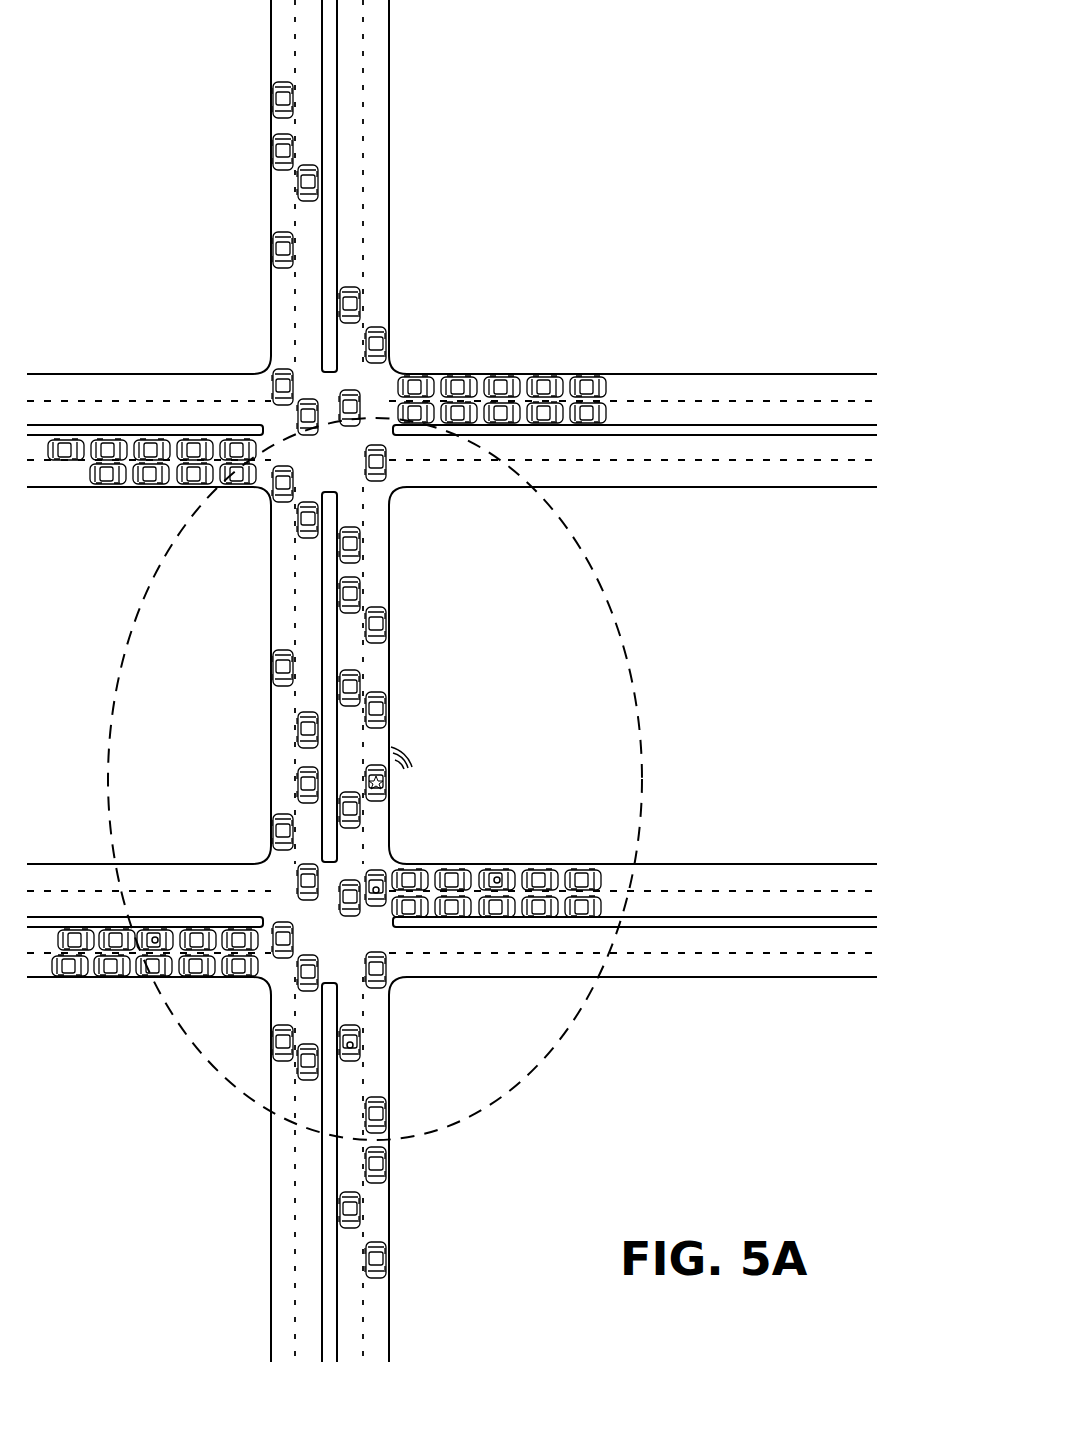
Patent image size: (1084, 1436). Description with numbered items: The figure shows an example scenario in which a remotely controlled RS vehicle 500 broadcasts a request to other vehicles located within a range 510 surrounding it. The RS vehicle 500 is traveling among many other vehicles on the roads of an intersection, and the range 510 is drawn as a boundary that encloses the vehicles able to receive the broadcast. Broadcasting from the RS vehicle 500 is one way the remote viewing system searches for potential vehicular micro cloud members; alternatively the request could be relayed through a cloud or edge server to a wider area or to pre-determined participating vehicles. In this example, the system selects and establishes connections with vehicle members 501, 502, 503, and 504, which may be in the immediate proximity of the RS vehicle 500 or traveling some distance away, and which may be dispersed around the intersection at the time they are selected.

The RS vehicle 500 is at (386, 789).
The vehicle member 501 is at (152, 936).
The vehicle member 502 is at (358, 1040).
The vehicle member 503 is at (377, 870).
The vehicle member 504 is at (499, 871).
The range 510 is at (637, 712).